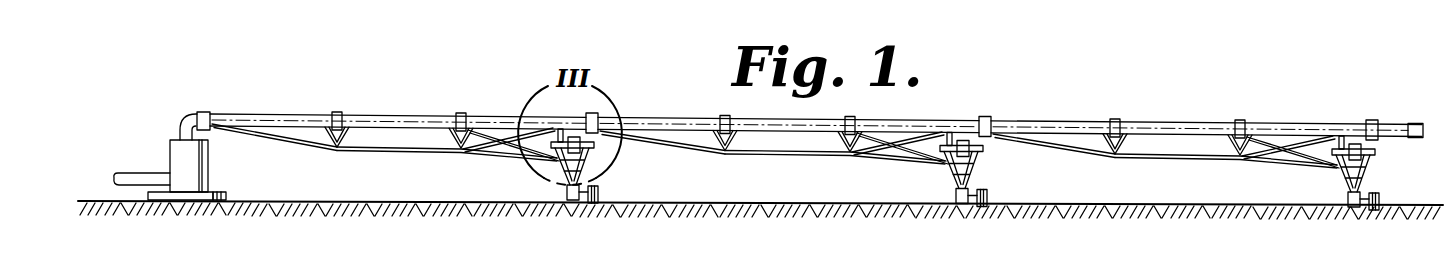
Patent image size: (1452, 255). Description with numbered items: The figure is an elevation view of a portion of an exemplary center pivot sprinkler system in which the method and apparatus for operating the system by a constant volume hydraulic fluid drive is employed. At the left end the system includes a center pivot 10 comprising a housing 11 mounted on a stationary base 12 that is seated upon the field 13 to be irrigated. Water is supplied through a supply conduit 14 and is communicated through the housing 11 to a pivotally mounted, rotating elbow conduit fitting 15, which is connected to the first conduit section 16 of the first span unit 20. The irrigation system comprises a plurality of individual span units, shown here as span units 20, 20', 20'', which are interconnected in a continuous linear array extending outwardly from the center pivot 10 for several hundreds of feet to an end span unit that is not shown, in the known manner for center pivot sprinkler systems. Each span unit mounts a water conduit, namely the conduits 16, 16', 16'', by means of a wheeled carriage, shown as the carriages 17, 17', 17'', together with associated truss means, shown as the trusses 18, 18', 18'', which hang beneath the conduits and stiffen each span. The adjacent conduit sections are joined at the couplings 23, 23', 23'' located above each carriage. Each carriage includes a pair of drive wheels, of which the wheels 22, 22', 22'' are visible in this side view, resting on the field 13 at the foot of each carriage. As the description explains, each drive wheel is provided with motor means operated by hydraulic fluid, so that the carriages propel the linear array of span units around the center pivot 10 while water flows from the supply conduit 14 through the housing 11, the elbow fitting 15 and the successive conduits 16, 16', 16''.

The center pivot 10 is at (165, 133).
The housing 11 is at (202, 155).
The base plate 12 is at (227, 198).
The field 13 is at (469, 200).
The supply conduit 14 is at (133, 173).
The rotating elbow conduit fitting 15 is at (183, 130).
The first conduit section 16 is at (398, 101).
The water conduit 16' is at (788, 110).
The water conduit 16'' is at (1207, 105).
The wheeled carriage 17 is at (607, 164).
The wheeled carriage 17' is at (996, 168).
The wheeled carriage 17'' is at (1388, 171).
The truss 18 is at (385, 160).
The truss 18' is at (774, 164).
The truss 18'' is at (1166, 165).
The first span unit 20 is at (437, 143).
The span unit 20' is at (825, 140).
The span unit 20'' is at (1218, 143).
The drive wheel 22 is at (613, 218).
The drive wheel 22' is at (1011, 220).
The drive wheel 22'' is at (1399, 222).
The pipe coupling 23 is at (615, 97).
The pipe coupling 23' is at (1006, 111).
The pipe coupling 23'' is at (1388, 106).